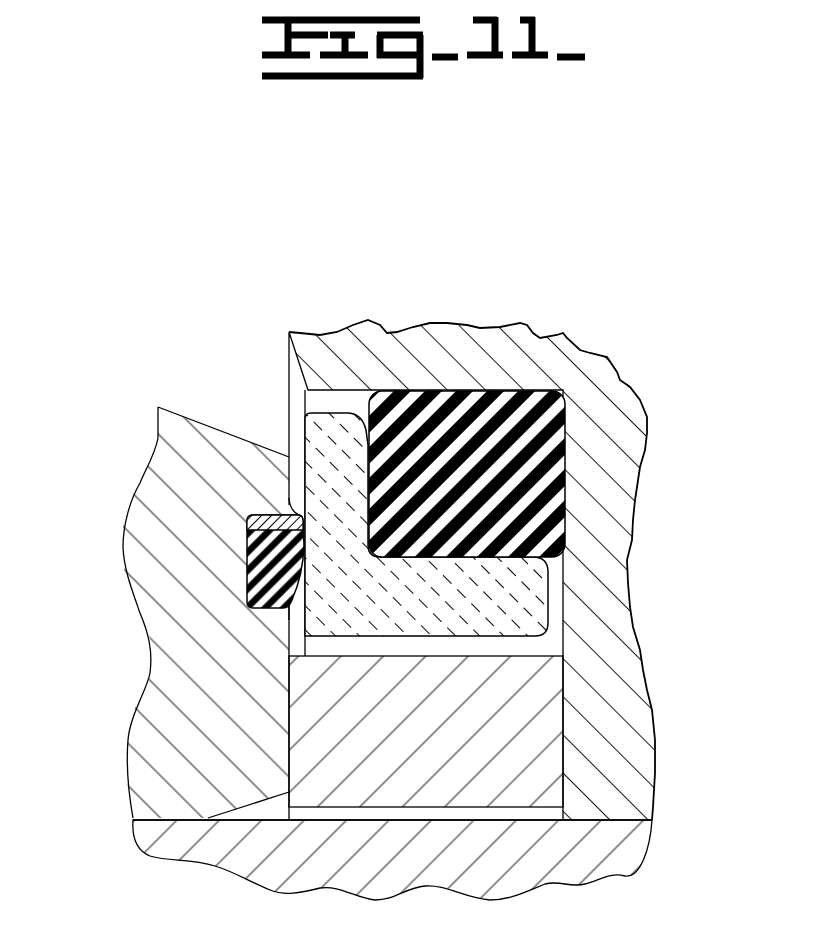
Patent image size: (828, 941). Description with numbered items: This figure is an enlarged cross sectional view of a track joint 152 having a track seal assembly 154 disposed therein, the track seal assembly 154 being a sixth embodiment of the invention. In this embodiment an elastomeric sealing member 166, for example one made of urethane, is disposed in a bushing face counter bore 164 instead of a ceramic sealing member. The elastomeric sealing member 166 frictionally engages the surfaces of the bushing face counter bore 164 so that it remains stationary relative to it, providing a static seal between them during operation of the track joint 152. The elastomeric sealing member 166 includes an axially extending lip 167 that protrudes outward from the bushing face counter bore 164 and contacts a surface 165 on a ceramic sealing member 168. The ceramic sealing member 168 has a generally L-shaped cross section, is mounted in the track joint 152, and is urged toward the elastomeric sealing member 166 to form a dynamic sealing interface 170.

The track joint 152 is at (251, 402).
The track seal assembly 154 is at (356, 412).
The bushing face counter bore 164 is at (224, 557).
The surface 165 is at (305, 430).
The elastomeric sealing member 166 is at (176, 541).
The axially extending lip 167 is at (299, 507).
The ceramic sealing member 168 is at (520, 600).
The dynamic sealing interface 170 is at (298, 515).